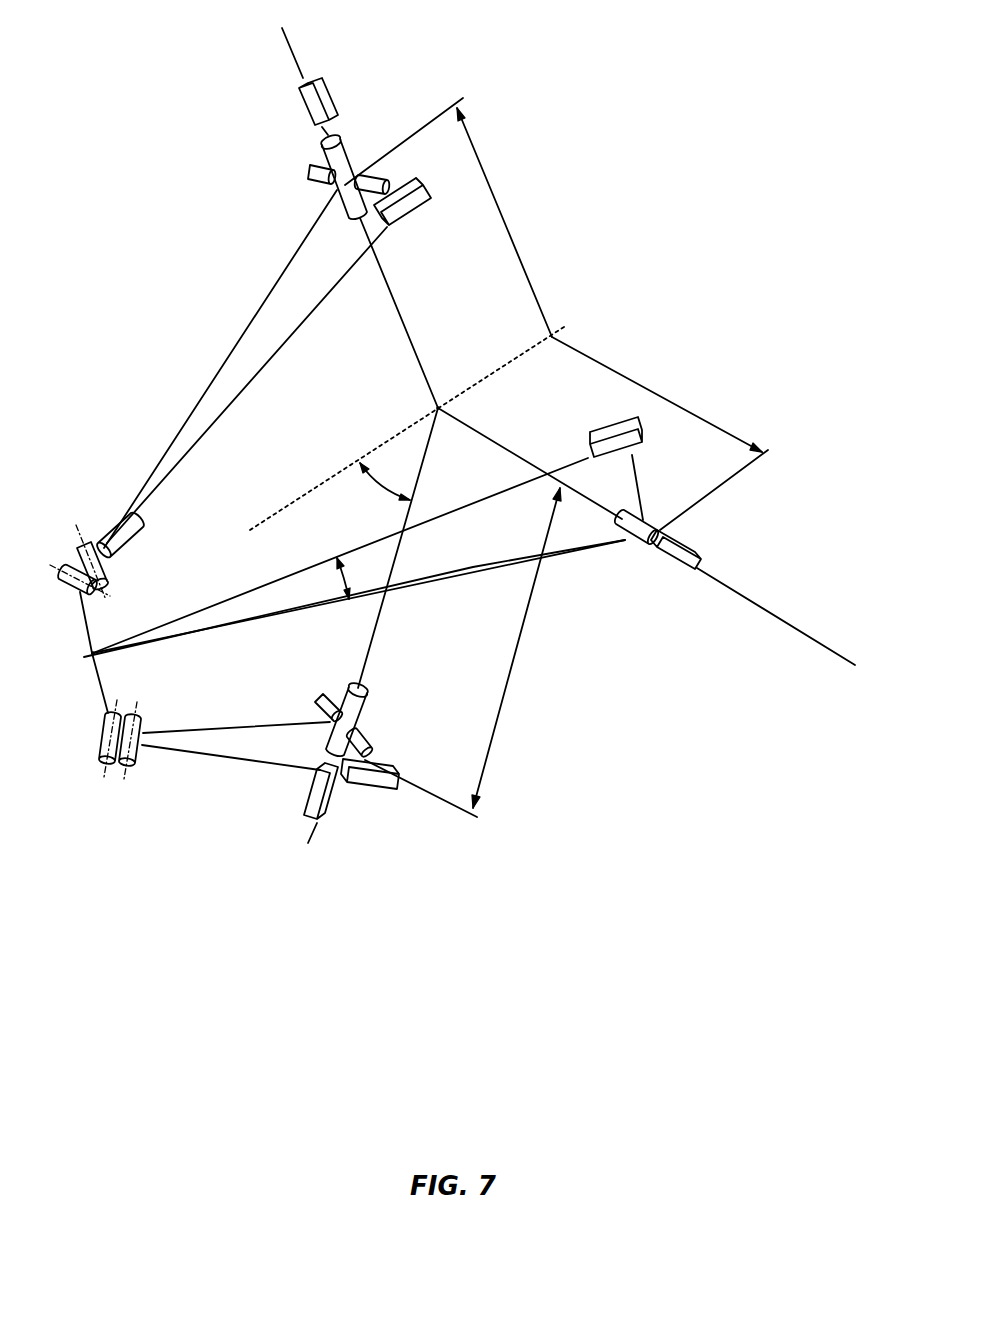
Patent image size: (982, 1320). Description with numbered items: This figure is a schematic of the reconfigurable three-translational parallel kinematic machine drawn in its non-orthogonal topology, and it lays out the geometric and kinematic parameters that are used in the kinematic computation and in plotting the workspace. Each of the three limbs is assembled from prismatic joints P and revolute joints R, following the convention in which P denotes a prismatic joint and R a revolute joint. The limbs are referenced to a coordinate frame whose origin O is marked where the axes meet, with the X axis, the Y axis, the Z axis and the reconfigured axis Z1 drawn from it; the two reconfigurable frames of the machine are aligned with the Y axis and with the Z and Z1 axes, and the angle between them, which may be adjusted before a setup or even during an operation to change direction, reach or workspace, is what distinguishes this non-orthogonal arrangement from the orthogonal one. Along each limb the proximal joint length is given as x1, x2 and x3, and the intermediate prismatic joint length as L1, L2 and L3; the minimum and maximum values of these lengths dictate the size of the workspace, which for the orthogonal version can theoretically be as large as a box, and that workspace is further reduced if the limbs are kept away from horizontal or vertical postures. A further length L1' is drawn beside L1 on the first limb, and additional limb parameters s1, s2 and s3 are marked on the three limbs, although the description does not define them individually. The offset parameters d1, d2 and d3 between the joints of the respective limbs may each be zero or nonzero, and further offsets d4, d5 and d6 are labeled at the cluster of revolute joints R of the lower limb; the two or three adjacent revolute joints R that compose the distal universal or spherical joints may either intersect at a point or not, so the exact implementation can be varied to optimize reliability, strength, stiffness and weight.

The prismatic joint P is at (500, 452).
The revolute joint R is at (351, 451).
The origin O is at (444, 389).
The X axis X is at (657, 549).
The Y axis Y is at (350, 209).
The Z axis Z is at (396, 439).
The Z' axis Z1 is at (365, 641).
The proximal joint length of the first limb x1 is at (660, 433).
The proximal joint length of the second limb x2 is at (448, 217).
The proximal joint length of the third limb x3 is at (463, 652).
The strut s1 is at (340, 555).
The strut s2 is at (247, 385).
The strut s3 is at (231, 769).
The intermediate prismatic joint length of the first limb L1 is at (359, 596).
The link L1' is at (354, 604).
The intermediate prismatic joint length of the second limb L2 is at (220, 369).
The intermediate prismatic joint length of the third limb L3 is at (236, 718).
The offset parameter d1 is at (651, 487).
The offset parameter d2 is at (359, 178).
The offset parameter d3 is at (359, 731).
The offset d4 is at (108, 635).
The offset d5 is at (73, 622).
The offset d6 is at (92, 683).